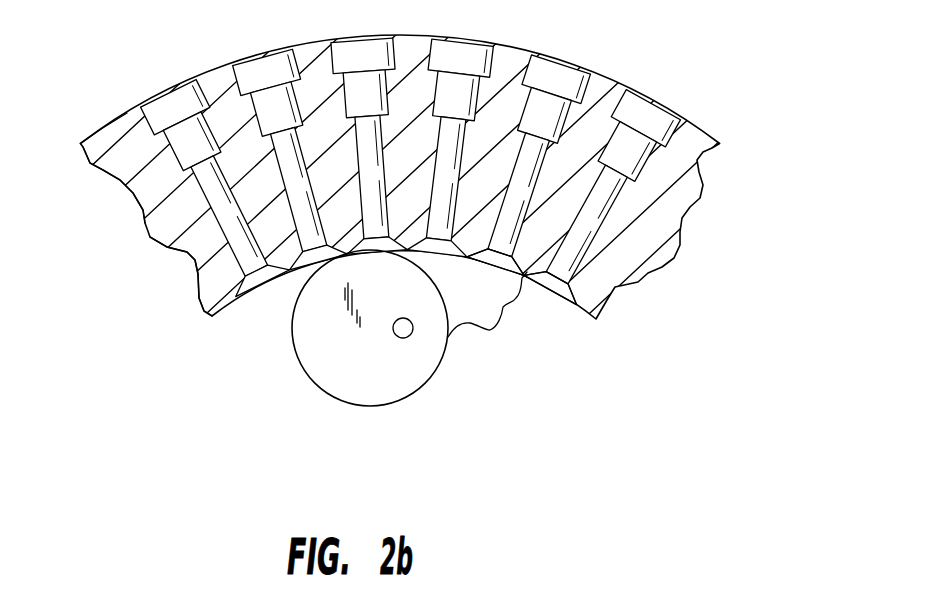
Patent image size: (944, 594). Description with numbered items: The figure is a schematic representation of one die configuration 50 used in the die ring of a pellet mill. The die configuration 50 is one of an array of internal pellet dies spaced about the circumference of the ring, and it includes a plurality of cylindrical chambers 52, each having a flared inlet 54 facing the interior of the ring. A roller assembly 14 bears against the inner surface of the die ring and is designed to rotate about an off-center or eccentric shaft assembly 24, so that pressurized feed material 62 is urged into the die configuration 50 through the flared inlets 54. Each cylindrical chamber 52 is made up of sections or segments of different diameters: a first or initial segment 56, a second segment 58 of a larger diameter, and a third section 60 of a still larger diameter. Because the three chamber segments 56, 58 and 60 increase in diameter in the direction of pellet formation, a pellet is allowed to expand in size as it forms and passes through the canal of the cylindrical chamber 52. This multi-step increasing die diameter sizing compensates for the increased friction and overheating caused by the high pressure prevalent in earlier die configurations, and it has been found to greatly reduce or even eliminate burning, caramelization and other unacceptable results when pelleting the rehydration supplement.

The roller assembly 14 is at (399, 417).
The eccentric shaft assembly 24 is at (402, 340).
The die configuration 50 is at (752, 205).
The cylindrical chambers 52 is at (540, 206).
The flared inlets 54 is at (497, 268).
The first segment 56 is at (187, 260).
The second segment 58 is at (131, 197).
The third section 60 is at (85, 148).
The pressurized feed material 62 is at (482, 301).